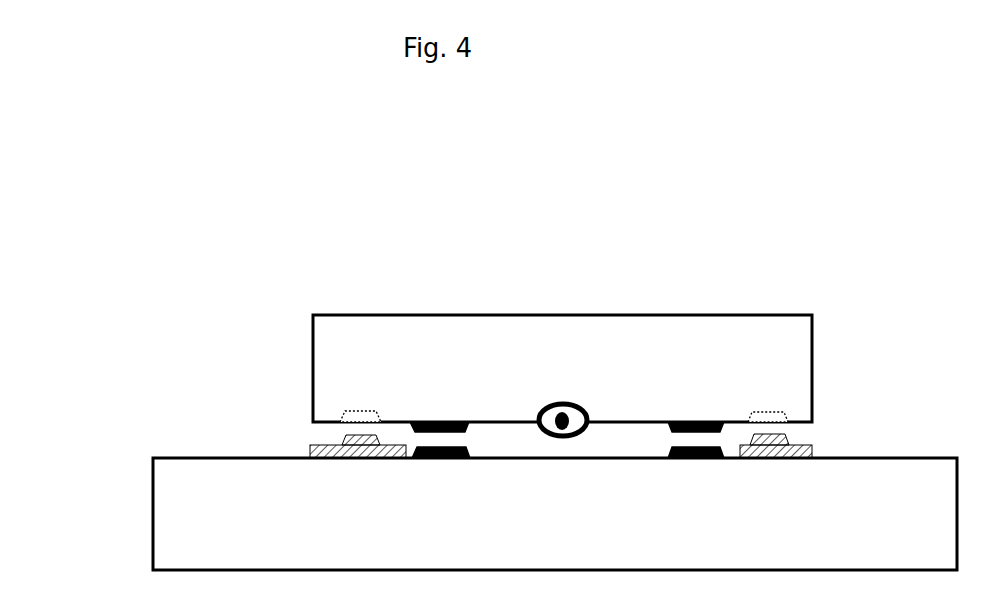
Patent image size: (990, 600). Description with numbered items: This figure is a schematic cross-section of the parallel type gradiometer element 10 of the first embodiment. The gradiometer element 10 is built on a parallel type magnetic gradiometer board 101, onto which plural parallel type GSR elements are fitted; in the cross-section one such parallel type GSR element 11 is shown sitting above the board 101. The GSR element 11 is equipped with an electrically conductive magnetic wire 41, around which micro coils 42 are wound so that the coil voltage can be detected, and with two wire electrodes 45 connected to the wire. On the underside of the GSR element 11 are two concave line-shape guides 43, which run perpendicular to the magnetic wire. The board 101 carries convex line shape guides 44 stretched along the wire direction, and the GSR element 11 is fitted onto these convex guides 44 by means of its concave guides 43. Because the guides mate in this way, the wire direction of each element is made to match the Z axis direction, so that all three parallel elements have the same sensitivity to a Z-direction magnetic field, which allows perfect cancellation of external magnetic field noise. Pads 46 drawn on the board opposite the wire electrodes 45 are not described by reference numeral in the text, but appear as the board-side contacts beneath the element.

The gradiometer element 10 is at (170, 373).
The parallel type GSR element 11 is at (729, 311).
The parallel type magnetic gradiometer board 101 is at (181, 533).
The magnetic wire 41 is at (566, 402).
The micro coils 42 is at (574, 441).
The concave line-shape guides 43 is at (359, 405).
The convex line shape guides 44 is at (353, 449).
The wire electrodes 45 is at (438, 418).
The substrate solder pad 46 is at (440, 464).